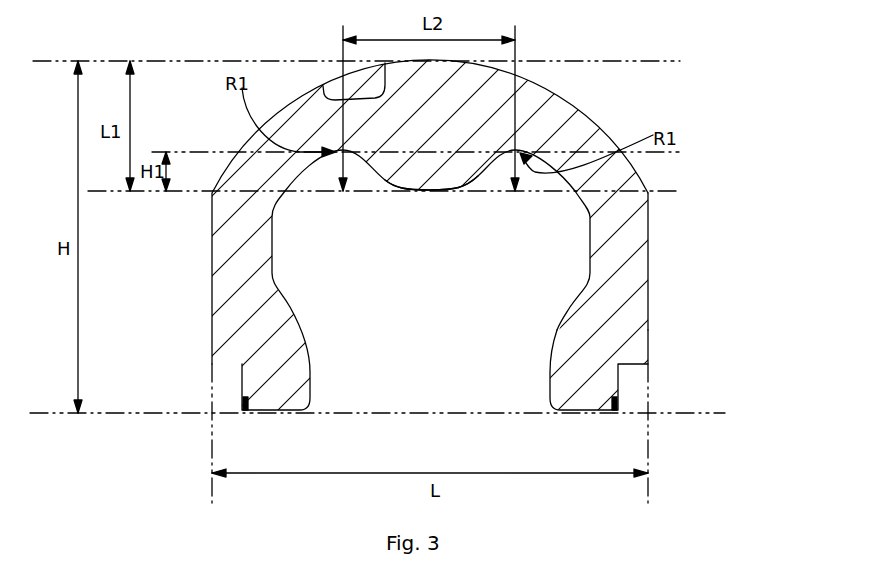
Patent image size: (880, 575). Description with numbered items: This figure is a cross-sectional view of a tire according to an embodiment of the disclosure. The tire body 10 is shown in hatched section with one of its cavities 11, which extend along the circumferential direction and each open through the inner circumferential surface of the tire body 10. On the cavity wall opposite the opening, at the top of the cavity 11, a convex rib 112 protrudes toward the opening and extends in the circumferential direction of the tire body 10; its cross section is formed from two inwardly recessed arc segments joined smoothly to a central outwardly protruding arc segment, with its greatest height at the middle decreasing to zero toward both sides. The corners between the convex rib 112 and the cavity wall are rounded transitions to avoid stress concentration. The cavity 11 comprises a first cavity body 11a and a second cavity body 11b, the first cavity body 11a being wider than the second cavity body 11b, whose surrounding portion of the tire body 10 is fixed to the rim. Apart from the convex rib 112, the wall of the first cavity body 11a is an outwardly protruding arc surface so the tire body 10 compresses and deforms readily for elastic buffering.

The tire body 10 is at (502, 102).
The cavity 11 is at (651, 300).
The first cavity body 11a is at (575, 263).
The second cavity body 11b is at (527, 360).
The convex rib 112 is at (423, 191).